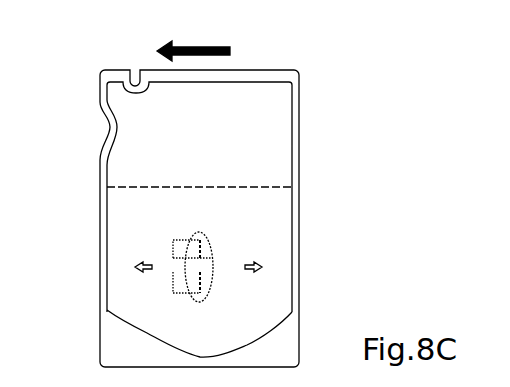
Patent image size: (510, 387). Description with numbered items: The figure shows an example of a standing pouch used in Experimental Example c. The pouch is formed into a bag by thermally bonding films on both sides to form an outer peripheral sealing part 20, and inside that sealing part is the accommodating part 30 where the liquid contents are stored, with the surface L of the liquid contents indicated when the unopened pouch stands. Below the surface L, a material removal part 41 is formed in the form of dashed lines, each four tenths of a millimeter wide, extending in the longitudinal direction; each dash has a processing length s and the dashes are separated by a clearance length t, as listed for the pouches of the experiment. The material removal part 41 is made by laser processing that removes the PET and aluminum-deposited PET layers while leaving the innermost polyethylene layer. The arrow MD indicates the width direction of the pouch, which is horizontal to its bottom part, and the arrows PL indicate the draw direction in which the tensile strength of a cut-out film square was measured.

The outer peripheral sealing part 20 is at (272, 72).
The accommodating part 30 is at (205, 146).
The material removal part 41 is at (213, 278).
The surface of the liquid contents L is at (127, 188).
The width direction of the pouch MD is at (193, 42).
The draw direction PL is at (203, 255).
The processing length s is at (173, 255).
The clearance length t is at (207, 272).